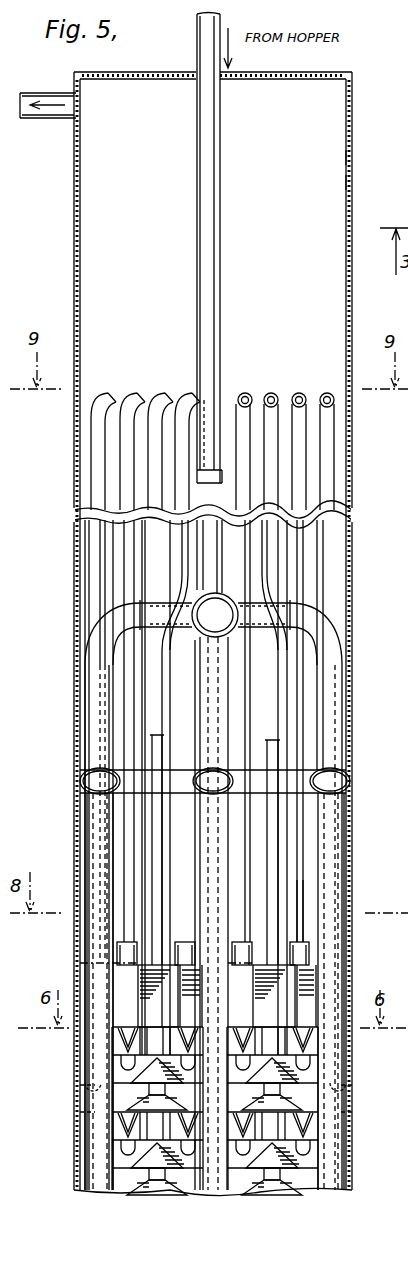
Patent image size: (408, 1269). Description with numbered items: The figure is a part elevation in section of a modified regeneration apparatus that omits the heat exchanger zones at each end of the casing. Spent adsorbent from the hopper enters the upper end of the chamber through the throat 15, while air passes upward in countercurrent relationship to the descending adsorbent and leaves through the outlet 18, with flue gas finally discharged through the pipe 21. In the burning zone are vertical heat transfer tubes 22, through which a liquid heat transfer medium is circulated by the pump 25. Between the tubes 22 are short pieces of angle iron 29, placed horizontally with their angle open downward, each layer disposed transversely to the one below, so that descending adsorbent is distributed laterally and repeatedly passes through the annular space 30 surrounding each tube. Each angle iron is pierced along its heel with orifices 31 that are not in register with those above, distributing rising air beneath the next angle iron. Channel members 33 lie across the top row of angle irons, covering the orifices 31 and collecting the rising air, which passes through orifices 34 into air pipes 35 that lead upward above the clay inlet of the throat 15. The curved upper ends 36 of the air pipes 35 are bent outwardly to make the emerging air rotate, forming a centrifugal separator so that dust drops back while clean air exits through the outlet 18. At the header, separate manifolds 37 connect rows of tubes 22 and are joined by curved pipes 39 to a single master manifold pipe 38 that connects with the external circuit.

The throat 15 is at (197, 58).
The outlet 18 is at (42, 116).
The pipe 21 is at (377, 158).
The pump 25 is at (377, 183).
The curved upper ends 36 is at (105, 428).
The master manifold pipe 38 is at (240, 612).
The curved pipes 39 is at (98, 728).
The manifolds 37 is at (80, 780).
The heat transfer tubes 22 is at (113, 842).
The air pipes 35 is at (303, 908).
The orifices 34 is at (307, 947).
The channel members 33 is at (138, 983).
The angle irons 29 is at (310, 1044).
The orifices 31 is at (284, 1090).
The annular space 30 is at (345, 1120).